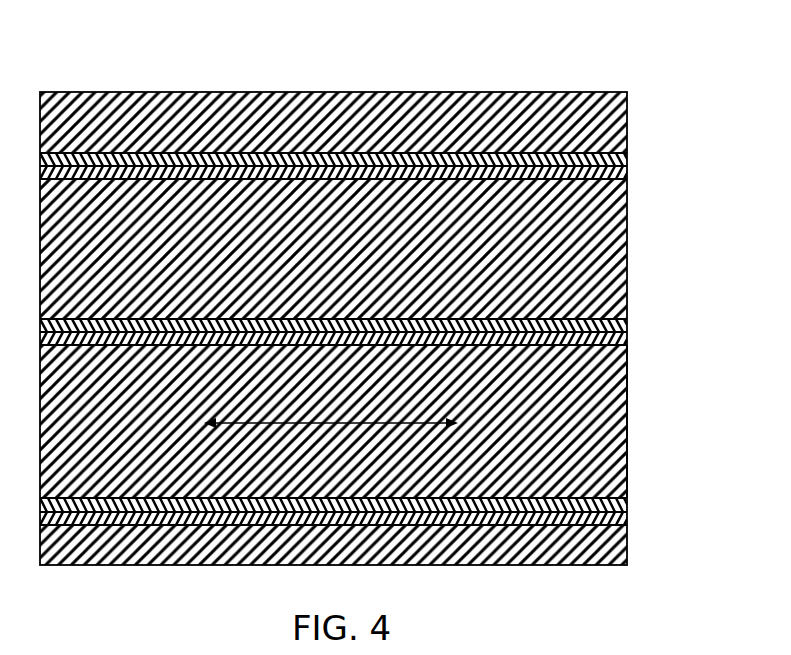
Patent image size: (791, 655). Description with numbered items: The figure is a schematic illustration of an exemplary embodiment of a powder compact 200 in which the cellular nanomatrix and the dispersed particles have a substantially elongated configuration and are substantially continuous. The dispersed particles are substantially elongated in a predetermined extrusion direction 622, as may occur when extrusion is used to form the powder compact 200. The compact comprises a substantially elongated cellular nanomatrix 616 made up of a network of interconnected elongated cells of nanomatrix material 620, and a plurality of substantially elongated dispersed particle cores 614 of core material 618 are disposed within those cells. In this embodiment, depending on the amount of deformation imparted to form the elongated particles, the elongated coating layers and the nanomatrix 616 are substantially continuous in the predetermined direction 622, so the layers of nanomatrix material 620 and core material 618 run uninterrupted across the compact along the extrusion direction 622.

The powder compact 200 is at (618, 68).
The substantially elongated dispersed particle cores 614 is at (636, 443).
The substantially elongated cellular nanomatrix 616 is at (590, 310).
The core material 618 is at (628, 402).
The nanomatrix material 620 is at (540, 318).
The predetermined extrusion direction 622 is at (430, 424).